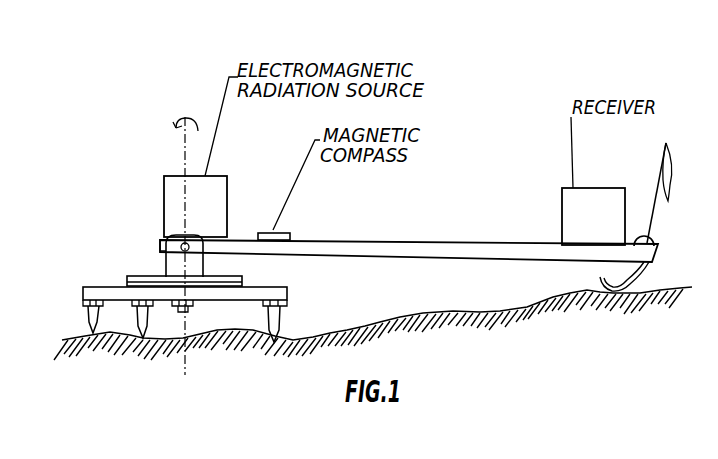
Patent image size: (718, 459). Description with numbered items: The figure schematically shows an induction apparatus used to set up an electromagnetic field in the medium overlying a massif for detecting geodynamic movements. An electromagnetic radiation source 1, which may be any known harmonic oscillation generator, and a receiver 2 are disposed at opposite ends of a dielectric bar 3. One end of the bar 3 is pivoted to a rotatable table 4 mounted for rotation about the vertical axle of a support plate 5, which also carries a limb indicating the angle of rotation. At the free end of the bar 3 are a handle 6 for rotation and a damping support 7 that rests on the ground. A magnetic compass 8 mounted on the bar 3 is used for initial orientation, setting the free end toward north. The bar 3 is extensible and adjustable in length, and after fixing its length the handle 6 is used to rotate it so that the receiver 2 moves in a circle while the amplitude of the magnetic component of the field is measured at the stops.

The electromagnetic radiation source 1 is at (225, 197).
The receiver 2 is at (592, 197).
The dielectric bar 3 is at (398, 245).
The rotatable table 4 is at (173, 264).
The support plate 5 is at (287, 297).
The handle 6 is at (647, 232).
The damping support 7 is at (636, 278).
The magnetic compass 8 is at (283, 229).